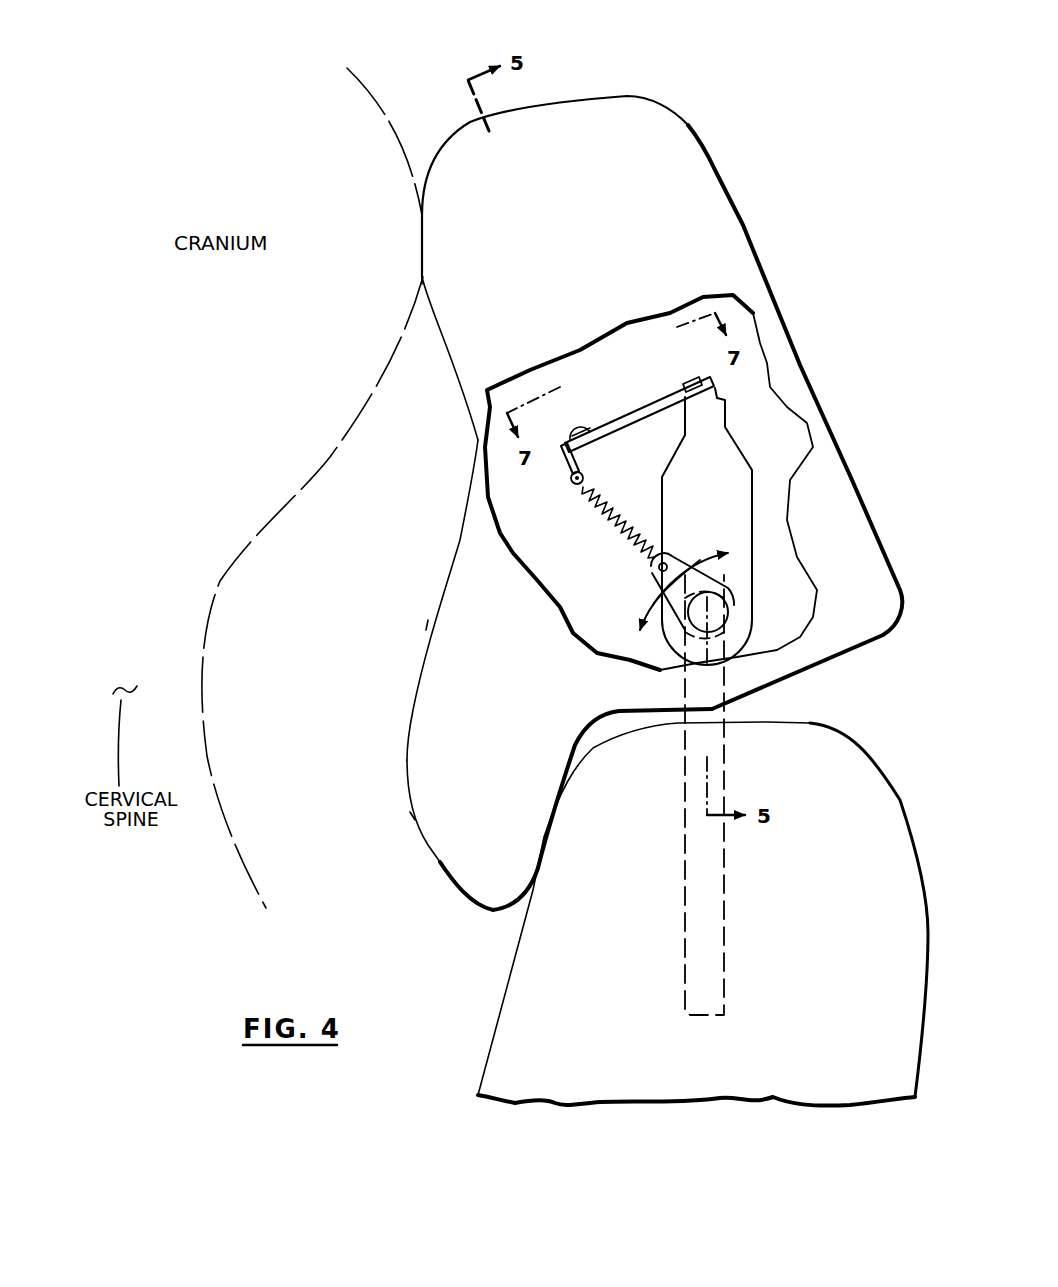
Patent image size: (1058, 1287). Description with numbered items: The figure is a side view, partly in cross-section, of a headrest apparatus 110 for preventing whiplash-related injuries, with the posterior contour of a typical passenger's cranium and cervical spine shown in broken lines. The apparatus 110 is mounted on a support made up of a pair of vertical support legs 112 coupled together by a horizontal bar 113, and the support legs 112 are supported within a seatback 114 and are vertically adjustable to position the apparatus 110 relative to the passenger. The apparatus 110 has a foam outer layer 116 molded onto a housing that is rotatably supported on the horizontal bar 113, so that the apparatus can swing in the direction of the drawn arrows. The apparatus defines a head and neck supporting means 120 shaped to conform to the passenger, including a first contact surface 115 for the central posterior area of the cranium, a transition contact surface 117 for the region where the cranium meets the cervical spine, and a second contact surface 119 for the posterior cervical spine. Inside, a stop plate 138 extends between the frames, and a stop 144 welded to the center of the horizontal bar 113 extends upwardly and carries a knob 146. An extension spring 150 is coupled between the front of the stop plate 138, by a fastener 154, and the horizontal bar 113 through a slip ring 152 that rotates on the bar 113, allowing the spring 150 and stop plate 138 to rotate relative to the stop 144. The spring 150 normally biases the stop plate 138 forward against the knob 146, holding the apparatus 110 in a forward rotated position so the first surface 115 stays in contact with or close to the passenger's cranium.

The apparatus 110 is at (748, 221).
The vertical support legs 112 is at (686, 865).
The horizontal bar 113 is at (717, 605).
The seatback 114 is at (873, 759).
The first contact surface 115 is at (414, 281).
The foam outer layer 116 is at (438, 755).
The transition contact surface 117 is at (420, 594).
The second contact surface 119 is at (402, 817).
The head and neck supporting means 120 is at (457, 540).
The stop plate 138 is at (624, 420).
The stop 144 is at (651, 482).
The knob 146 is at (690, 380).
The extension spring 150 is at (600, 528).
The slip ring 152 is at (654, 580).
The fastener 154 is at (565, 460).